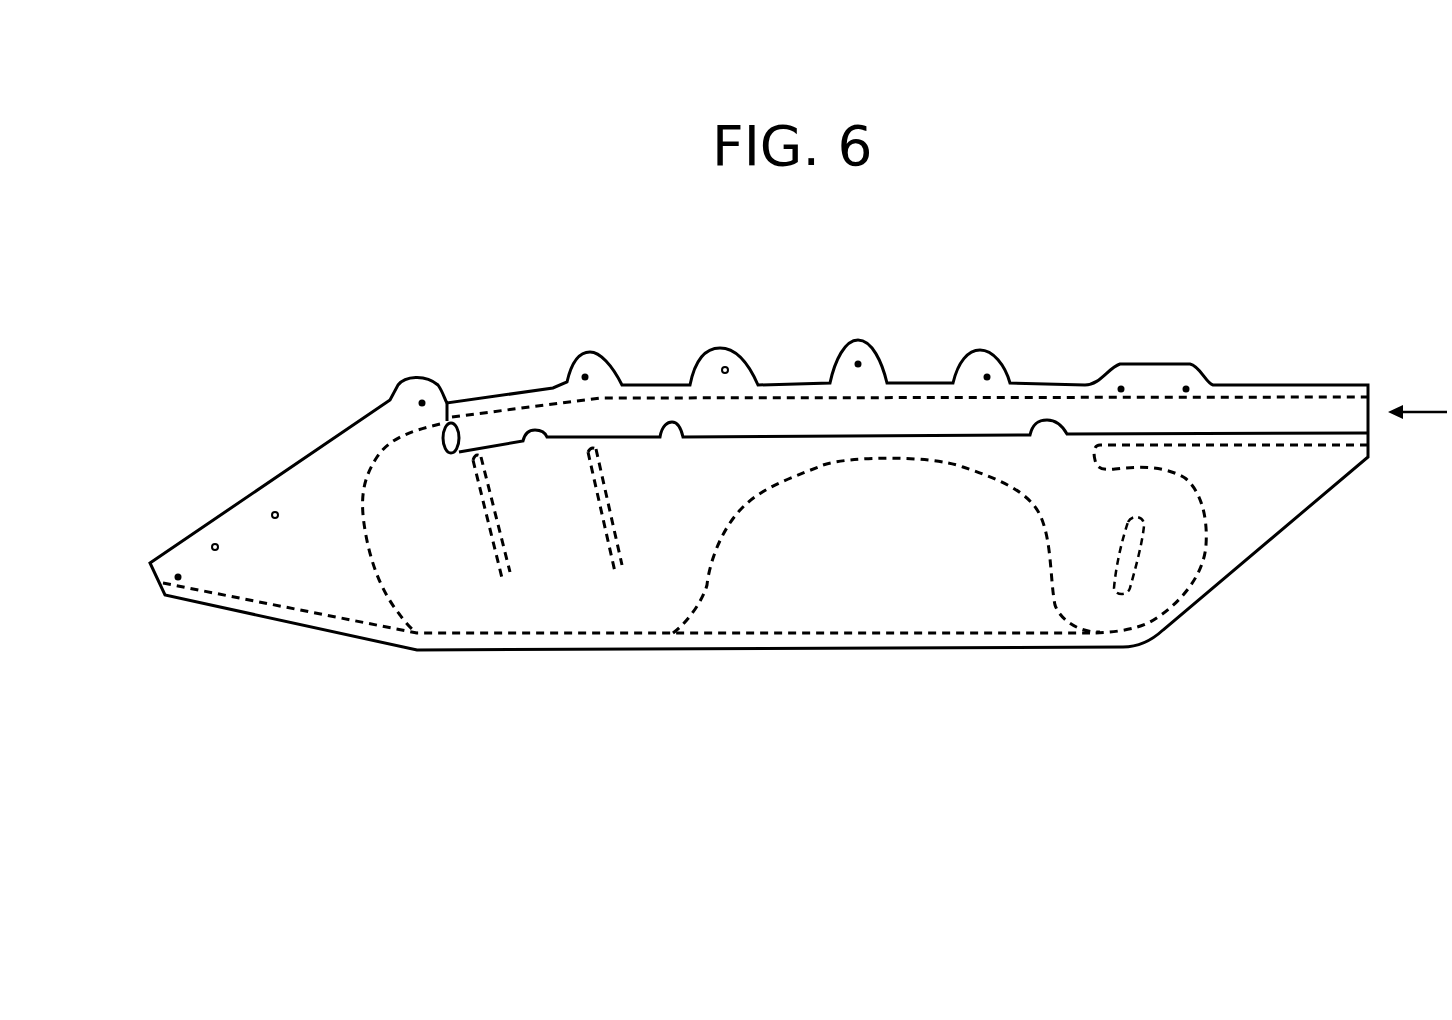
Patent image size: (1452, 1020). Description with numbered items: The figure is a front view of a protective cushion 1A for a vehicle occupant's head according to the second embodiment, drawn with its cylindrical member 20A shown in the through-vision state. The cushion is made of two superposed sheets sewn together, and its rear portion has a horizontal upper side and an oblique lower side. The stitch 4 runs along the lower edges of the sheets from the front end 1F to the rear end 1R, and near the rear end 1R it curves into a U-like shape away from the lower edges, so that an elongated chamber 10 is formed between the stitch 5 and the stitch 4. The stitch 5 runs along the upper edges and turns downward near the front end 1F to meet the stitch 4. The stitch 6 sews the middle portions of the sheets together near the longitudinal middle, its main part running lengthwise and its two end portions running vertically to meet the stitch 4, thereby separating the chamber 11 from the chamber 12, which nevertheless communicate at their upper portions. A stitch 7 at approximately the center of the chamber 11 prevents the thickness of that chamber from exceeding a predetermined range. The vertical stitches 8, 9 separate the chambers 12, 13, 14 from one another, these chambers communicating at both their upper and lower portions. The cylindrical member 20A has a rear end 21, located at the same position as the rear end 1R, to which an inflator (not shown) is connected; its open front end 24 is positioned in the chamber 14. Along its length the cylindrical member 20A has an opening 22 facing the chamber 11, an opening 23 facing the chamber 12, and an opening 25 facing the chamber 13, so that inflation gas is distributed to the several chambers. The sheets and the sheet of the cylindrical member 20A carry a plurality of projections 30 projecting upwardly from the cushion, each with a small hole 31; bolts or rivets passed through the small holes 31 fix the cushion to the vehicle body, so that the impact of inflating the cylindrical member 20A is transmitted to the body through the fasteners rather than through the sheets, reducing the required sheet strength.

The protective cushion 1A is at (550, 233).
The front end 1F is at (151, 580).
The rear end 1R is at (1370, 452).
The stitch 4 is at (273, 608).
The stitch 5 is at (380, 590).
The stitch 6 is at (783, 481).
The stitch 7 is at (1126, 553).
The stitch 8 is at (617, 555).
The stitch 9 is at (507, 567).
The elongated chamber 10 is at (1310, 438).
The chamber 11 is at (1060, 578).
The chamber 12 is at (683, 578).
The chamber 13 is at (577, 573).
The chamber 14 is at (457, 593).
The cylindrical member 20A is at (897, 420).
The rear end 21 is at (1370, 406).
The opening 22 is at (1053, 425).
The opening 23 is at (674, 430).
The open front end 24 is at (443, 446).
The opening 25 is at (537, 434).
The projection 30 is at (396, 388).
The small hole 31 is at (215, 547).